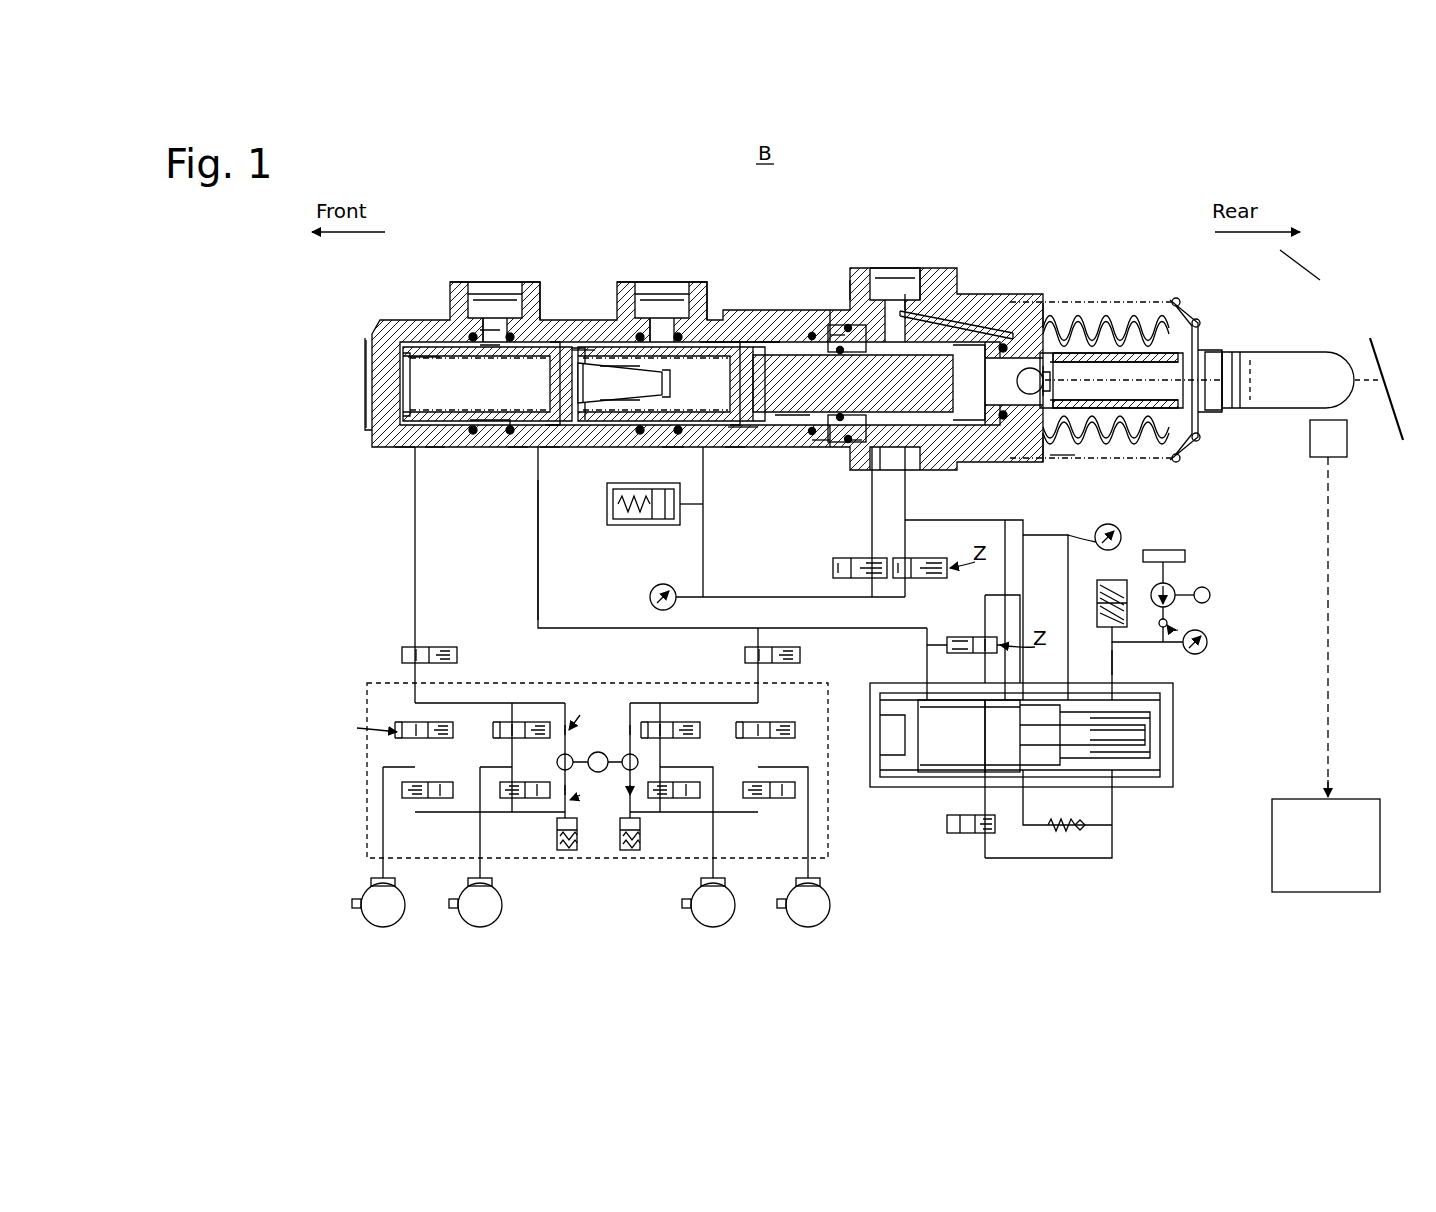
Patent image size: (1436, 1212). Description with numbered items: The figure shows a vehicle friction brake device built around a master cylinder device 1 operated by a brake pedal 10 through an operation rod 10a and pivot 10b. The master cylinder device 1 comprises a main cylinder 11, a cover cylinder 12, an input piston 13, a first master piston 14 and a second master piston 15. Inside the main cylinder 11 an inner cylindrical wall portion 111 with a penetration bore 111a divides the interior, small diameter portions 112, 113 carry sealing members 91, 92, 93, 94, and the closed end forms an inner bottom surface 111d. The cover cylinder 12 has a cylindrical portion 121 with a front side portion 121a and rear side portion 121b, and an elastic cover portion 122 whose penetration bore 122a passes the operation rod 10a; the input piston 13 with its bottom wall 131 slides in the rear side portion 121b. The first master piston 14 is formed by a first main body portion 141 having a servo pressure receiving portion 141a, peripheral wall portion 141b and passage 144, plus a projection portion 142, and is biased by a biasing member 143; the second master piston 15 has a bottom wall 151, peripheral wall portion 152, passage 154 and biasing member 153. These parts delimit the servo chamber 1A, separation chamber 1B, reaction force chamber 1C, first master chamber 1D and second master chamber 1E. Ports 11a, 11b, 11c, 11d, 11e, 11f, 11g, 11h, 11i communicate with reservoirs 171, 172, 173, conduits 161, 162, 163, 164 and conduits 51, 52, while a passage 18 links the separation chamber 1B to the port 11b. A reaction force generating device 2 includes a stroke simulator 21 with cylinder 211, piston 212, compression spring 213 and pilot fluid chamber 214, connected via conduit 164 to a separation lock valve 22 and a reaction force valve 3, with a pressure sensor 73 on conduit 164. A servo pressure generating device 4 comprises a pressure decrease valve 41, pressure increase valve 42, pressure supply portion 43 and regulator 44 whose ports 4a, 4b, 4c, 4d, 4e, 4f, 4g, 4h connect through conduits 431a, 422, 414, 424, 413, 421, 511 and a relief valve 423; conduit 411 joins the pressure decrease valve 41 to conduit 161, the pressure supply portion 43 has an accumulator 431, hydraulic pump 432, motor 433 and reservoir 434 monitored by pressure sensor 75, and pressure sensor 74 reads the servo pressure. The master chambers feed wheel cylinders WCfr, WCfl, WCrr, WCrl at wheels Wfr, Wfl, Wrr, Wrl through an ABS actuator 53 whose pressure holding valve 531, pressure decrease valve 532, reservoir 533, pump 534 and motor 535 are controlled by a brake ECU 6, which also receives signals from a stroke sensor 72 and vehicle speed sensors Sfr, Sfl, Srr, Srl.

The master cylinder device 1 is at (1308, 266).
The brake pedal 10 is at (1221, 341).
The operation rod 10a is at (1152, 373).
The pivot 10b is at (1112, 372).
The main cylinder 11 is at (388, 322).
The port 11a is at (887, 468).
The port 11b is at (918, 300).
The port 11c is at (849, 455).
The port 11d is at (821, 447).
The port 11e is at (736, 447).
The port 11f is at (659, 326).
The port 11g is at (549, 447).
The port 11h is at (496, 332).
The port 11i is at (405, 450).
The cover cylinder 12 is at (1134, 420).
The input piston 13 is at (1040, 378).
The first master piston 14 is at (757, 440).
The second master piston 15 is at (562, 356).
The passage 18 is at (935, 372).
The servo chamber 1A is at (793, 430).
The separation chamber 1B is at (975, 425).
The reaction force chamber 1C is at (750, 432).
The first master chamber 1D is at (637, 524).
The second master chamber 1E is at (436, 449).
The reaction force generating device 2 is at (636, 580).
The reaction force valve 3 is at (900, 560).
The servo pressure generating device 4 is at (1087, 777).
The port 4a is at (1110, 683).
The port 4b is at (1114, 792).
The port 4c is at (1070, 683).
The port 4d is at (1025, 683).
The port 4e is at (1027, 792).
The port 4f is at (1012, 683).
The port 4g is at (990, 792).
The port 4h is at (927, 683).
The brake ECU 6 is at (1358, 800).
The stroke simulator 21 is at (601, 430).
The separation lock valve 22 is at (850, 556).
The pressure decrease valve 41 is at (955, 640).
The pressure increase valve 42 is at (950, 834).
The pressure supply portion 43 is at (1183, 616).
The regulator 44 is at (1173, 758).
The conduit 51 is at (538, 582).
The conduit 52 is at (415, 590).
The ABS actuator 53 is at (675, 685).
The stroke sensor 72 is at (1329, 458).
The pressure sensor 73 is at (672, 592).
The pressure sensor 74 is at (1096, 540).
The pressure sensor 75 is at (1201, 653).
The sealing member 91 is at (678, 333).
The sealing member 92 is at (637, 334).
The sealing member 93 is at (513, 334).
The sealing member 94 is at (469, 334).
The inner cylindrical wall portion 111 is at (840, 338).
The penetration bore 111a is at (832, 330).
The inner bottom surface 111d is at (375, 438).
The small diameter portion 112 is at (673, 447).
The small diameter portion 113 is at (518, 447).
The cylindrical portion 121 is at (1176, 462).
The front side portion 121a is at (1052, 452).
The rear side portion 121b is at (1077, 457).
The cover portion 122 is at (1198, 452).
The penetration bore 122a is at (1203, 370).
The bottom wall 131 is at (1022, 345).
The first main body portion 141 is at (742, 263).
The servo pressure receiving portion 141a is at (770, 342).
The peripheral wall portion 141b is at (713, 342).
The projection portion 142 is at (962, 330).
The biasing member 143 is at (594, 350).
The passage 144 is at (598, 352).
The bottom wall 151 is at (554, 432).
The peripheral wall portion 152 is at (491, 436).
The biasing member 153 is at (428, 358).
The passage 154 is at (484, 334).
The conduit 161 is at (940, 520).
The conduit 162 is at (902, 505).
The conduit 163 is at (868, 497).
The conduit 164 is at (703, 500).
The reservoir 171 is at (892, 268).
The reservoir 172 is at (660, 282).
The reservoir 173 is at (494, 282).
The cylinder 211 is at (640, 432).
The piston 212 is at (660, 522).
The compression spring 213 is at (620, 512).
The pilot fluid chamber 214 is at (668, 522).
The conduit 411 is at (1005, 556).
The conduit 413 is at (985, 683).
The conduit 414 is at (1022, 626).
The conduit 421 is at (985, 805).
The conduit 422 is at (1005, 858).
The relief valve 423 is at (1060, 828).
The conduit 424 is at (1023, 828).
The accumulator 431 is at (1100, 610).
The conduit 431a is at (1113, 660).
The hydraulic pump 432 is at (1097, 606).
The motor 433 is at (1209, 591).
The reservoir 434 is at (1187, 557).
The conduit 511 is at (845, 628).
The pressure holding valve 531 is at (442, 722).
The pressure decrease valve 532 is at (430, 783).
The reservoir 533 is at (577, 826).
The pump 534 is at (569, 757).
The motor 535 is at (582, 765).
The wheel cylinder WCfr is at (388, 880).
The wheel cylinder WCfl is at (484, 880).
The wheel cylinder WCrr is at (718, 880).
The wheel cylinder WCrl is at (812, 880).
The front right wheel Wfr is at (388, 926).
The front left wheel Wfl is at (485, 926).
The rear right wheel Wrr is at (718, 926).
The rear left wheel Wrl is at (813, 926).
The vehicle speed sensor Sfr is at (356, 910).
The vehicle speed sensor Sfl is at (453, 910).
The vehicle speed sensor Srr is at (686, 910).
The vehicle speed sensor Srl is at (781, 910).